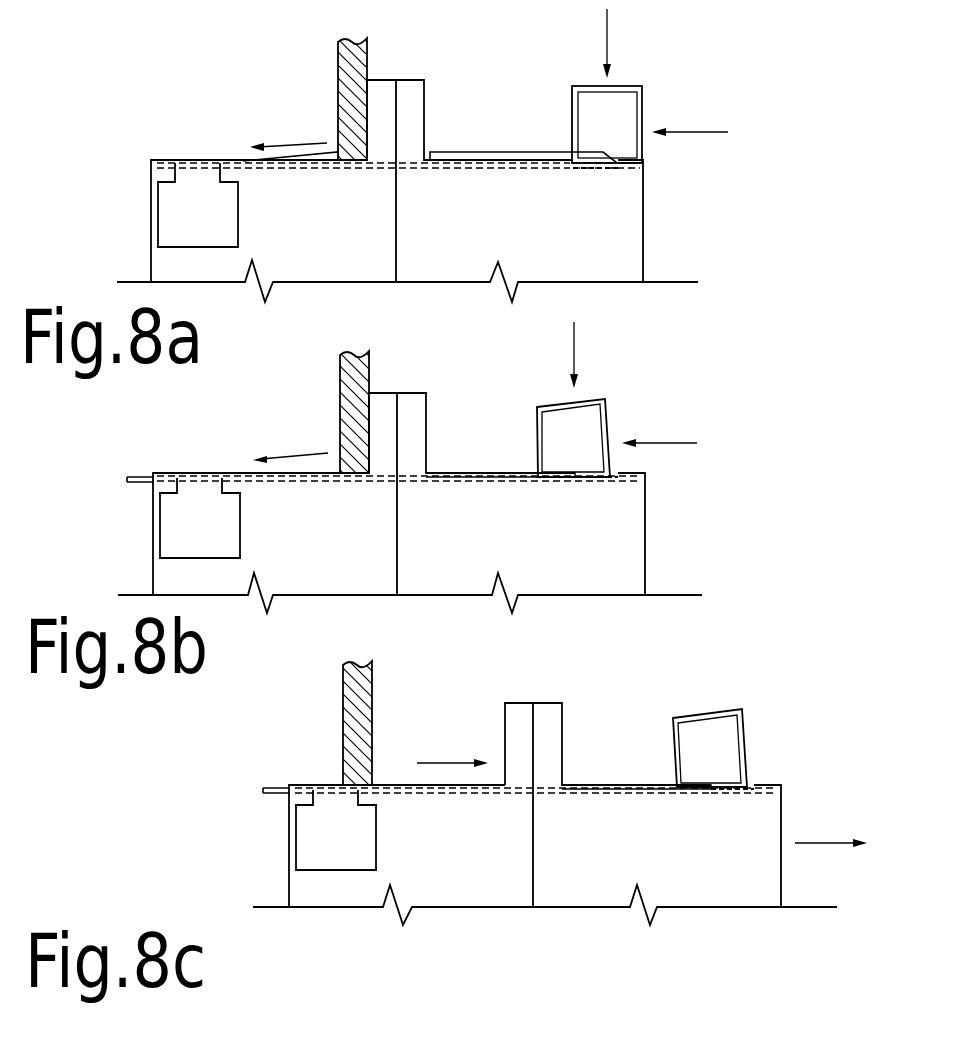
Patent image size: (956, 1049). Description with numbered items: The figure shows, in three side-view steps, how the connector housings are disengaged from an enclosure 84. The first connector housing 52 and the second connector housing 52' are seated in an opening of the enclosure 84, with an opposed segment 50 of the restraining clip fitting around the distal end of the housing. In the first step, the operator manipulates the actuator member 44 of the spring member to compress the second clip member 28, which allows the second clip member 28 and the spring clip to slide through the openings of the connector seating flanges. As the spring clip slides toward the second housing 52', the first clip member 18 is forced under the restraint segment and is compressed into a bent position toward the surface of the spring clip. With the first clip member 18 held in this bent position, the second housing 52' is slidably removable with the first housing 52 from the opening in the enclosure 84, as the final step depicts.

In FIG. 8A, the first clip member 18 is at (318, 153).
In FIG. 8B, the first clip member 18 is at (233, 468).
In FIG. 8C, the first clip member 18 is at (413, 780).
In FIG. 8A, the second clip member 28 is at (487, 152).
In FIG. 8B, the second clip member 28 is at (462, 473).
In FIG. 8C, the second clip member 28 is at (615, 784).
In FIG. 8A, the actuator member 44 is at (643, 108).
In FIG. 8B, the actuator member 44 is at (608, 421).
In FIG. 8C, the actuator member 44 is at (743, 730).
In FIG. 8A, the opposed segment 50 is at (181, 225).
In FIG. 8B, the opposed segment 50 is at (183, 538).
In FIG. 8C, the opposed segment 50 is at (320, 848).
In FIG. 8A, the connector housing 52 is at (505, 181).
In FIG. 8B, the connector housing 52 is at (507, 494).
In FIG. 8C, the connector housing 52 is at (643, 805).
In FIG. 8A, the second connector housing 52' is at (360, 221).
In FIG. 8B, the second connector housing 52' is at (364, 534).
In FIG. 8C, the second connector housing 52' is at (500, 846).
In FIG. 8A, the enclosure 84 is at (358, 60).
In FIG. 8B, the enclosure 84 is at (364, 370).
In FIG. 8C, the enclosure 84 is at (365, 682).